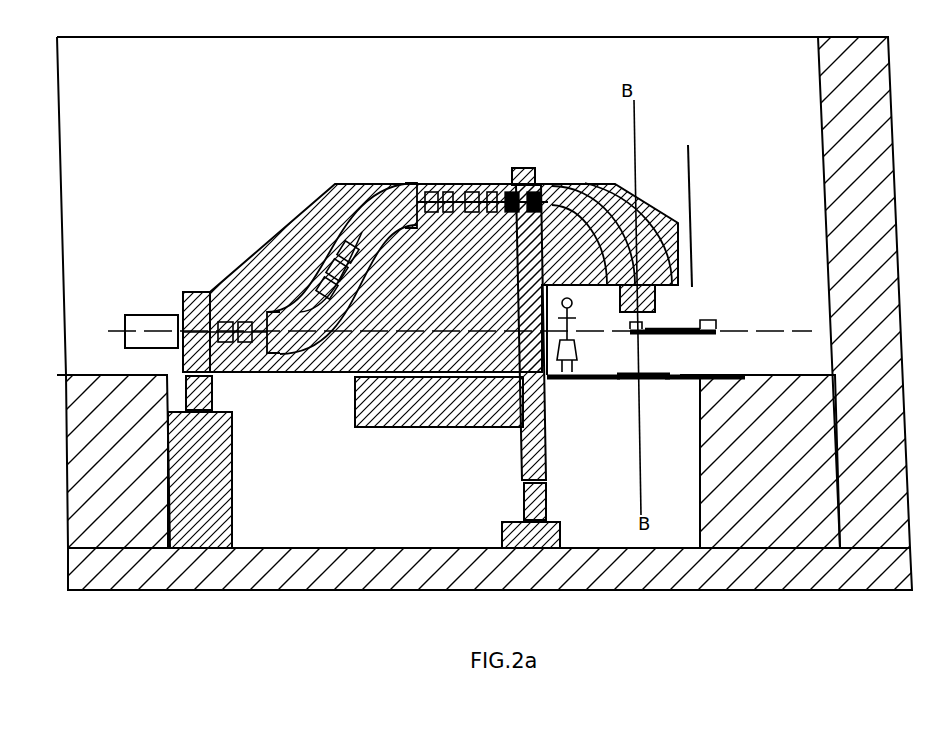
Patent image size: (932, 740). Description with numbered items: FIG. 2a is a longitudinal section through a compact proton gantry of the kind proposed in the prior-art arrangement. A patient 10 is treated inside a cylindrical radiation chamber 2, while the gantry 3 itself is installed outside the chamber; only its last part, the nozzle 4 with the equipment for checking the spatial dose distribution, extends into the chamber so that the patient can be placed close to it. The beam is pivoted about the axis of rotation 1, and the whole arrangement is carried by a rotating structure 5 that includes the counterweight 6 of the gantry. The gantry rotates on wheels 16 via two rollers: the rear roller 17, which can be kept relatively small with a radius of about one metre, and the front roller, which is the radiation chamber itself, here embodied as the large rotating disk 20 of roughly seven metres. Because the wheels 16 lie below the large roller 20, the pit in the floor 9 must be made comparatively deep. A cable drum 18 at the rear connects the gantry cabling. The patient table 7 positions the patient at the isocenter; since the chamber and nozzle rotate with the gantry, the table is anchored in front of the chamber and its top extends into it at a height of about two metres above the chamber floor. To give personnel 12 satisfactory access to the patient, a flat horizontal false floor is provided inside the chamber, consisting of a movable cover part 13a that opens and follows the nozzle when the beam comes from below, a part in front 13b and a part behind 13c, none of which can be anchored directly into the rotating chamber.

The axis of rotation 1 is at (453, 331).
The radiation chamber 2 is at (608, 357).
The gantry 3 is at (585, 185).
The nozzle 4 is at (662, 298).
The rotating structure 5 is at (446, 186).
The counterweight 6 is at (648, 192).
The patient table 7 is at (703, 337).
The floor 9 is at (367, 548).
The patient 10 is at (676, 337).
The personnel 12 is at (576, 318).
The movable part of the cover for the nozzle 13a is at (631, 381).
The part in front of the floor 13b is at (678, 381).
The part behind of the floor 13c is at (588, 381).
The wheels 16 is at (212, 390).
The rear roller 17 is at (200, 292).
The cable drum 18 is at (157, 315).
The rotating disk 20 is at (522, 168).